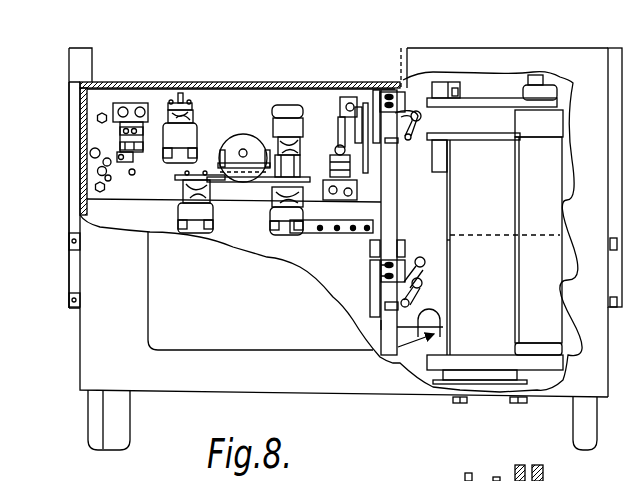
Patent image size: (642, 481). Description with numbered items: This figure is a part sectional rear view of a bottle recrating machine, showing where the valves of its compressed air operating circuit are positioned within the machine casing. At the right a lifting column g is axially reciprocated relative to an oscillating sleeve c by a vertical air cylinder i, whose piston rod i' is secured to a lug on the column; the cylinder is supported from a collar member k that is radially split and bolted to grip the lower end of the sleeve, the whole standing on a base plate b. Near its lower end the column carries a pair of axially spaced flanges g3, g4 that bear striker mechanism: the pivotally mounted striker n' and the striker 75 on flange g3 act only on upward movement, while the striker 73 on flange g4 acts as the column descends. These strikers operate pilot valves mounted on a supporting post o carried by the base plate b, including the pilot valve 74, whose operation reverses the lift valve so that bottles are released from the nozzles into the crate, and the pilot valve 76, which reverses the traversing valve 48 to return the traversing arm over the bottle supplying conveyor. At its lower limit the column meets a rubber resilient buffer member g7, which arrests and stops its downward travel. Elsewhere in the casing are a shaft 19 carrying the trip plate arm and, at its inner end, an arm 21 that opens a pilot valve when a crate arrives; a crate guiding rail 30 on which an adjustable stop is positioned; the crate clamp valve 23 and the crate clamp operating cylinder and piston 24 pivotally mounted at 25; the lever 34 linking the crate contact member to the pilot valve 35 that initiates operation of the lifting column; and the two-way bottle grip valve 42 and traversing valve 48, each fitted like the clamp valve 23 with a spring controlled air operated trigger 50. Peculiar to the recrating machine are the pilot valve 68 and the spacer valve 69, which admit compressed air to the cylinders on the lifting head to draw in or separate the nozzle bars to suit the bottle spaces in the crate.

The shaft 19 is at (90, 153).
The crate guiding rail 30 is at (72, 180).
The arm 21 is at (127, 160).
The traversing valve 48 is at (173, 140).
The spring controlled air operated trigger 50 is at (195, 123).
The two-way bottle grip valve 42 is at (197, 235).
The crate clamp operating cylinder and piston 24 is at (255, 147).
The pivot 25 is at (225, 182).
The spacer valve 69 is at (295, 130).
The pilot valve 35 is at (340, 167).
The lever 34 is at (342, 108).
The pilot valve 76 is at (387, 97).
The striker 73 is at (447, 140).
The crate clamp valve 23 is at (293, 222).
The pilot valve 68 is at (420, 275).
The pilot valve 74 is at (420, 302).
The oscillating sleeve c is at (465, 252).
The resilient buffer member g7 is at (432, 322).
The supporting post o is at (382, 324).
The striker 75 is at (440, 88).
The flange g3 is at (480, 100).
The piston rod i' is at (553, 49).
The lifting column g is at (510, 90).
The flange g4 is at (483, 140).
The air cylinder i is at (539, 232).
The collar member k is at (462, 363).
The block d is at (500, 375).
The base plate b is at (483, 397).
The striker n' is at (488, 469).